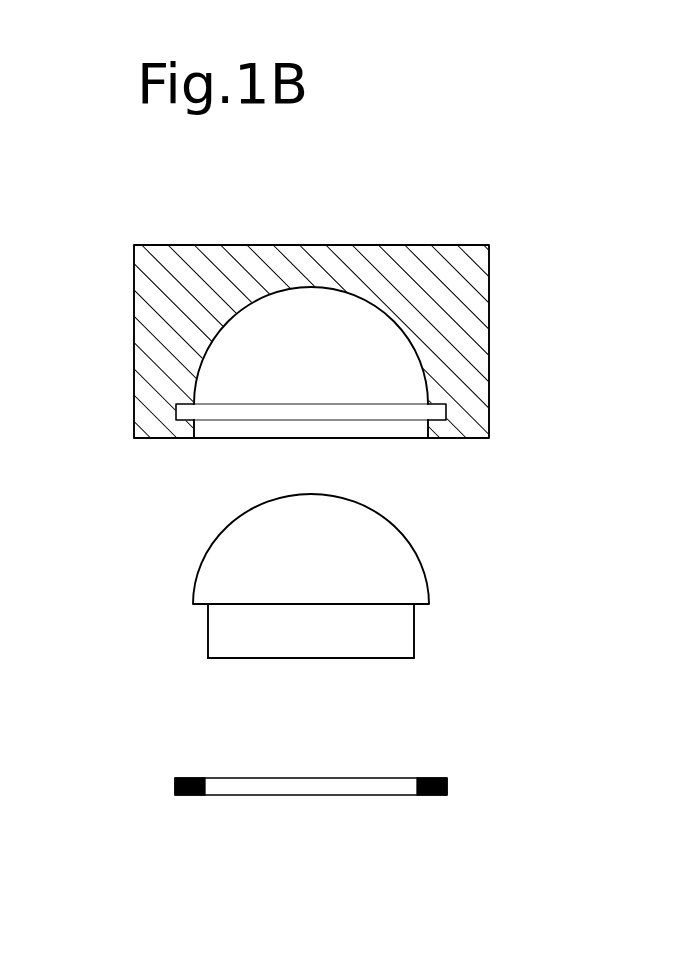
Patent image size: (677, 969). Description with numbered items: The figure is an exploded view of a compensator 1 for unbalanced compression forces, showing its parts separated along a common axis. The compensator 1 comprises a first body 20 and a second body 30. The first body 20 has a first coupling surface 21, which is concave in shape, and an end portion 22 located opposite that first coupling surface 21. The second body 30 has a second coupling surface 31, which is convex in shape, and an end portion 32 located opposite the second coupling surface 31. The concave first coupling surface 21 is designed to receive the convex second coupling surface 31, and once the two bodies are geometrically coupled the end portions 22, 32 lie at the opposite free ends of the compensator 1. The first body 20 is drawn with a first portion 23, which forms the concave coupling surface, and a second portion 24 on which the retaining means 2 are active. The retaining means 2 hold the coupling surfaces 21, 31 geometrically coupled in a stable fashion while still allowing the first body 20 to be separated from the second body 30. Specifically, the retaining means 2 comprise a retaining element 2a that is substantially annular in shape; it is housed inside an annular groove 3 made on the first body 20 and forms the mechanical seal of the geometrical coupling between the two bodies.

The compensator 1 is at (552, 263).
The first body 20 is at (490, 350).
The end portion 22 is at (398, 245).
The first portion 23 is at (286, 338).
The first coupling surface 21 is at (388, 317).
The second portion 24 is at (240, 425).
The annular groove 3 is at (447, 412).
The second coupling surface 31 is at (420, 558).
The second body 30 is at (425, 624).
The end portion 32 is at (373, 658).
The retaining means 2 is at (175, 420).
The retaining element 2a is at (447, 787).